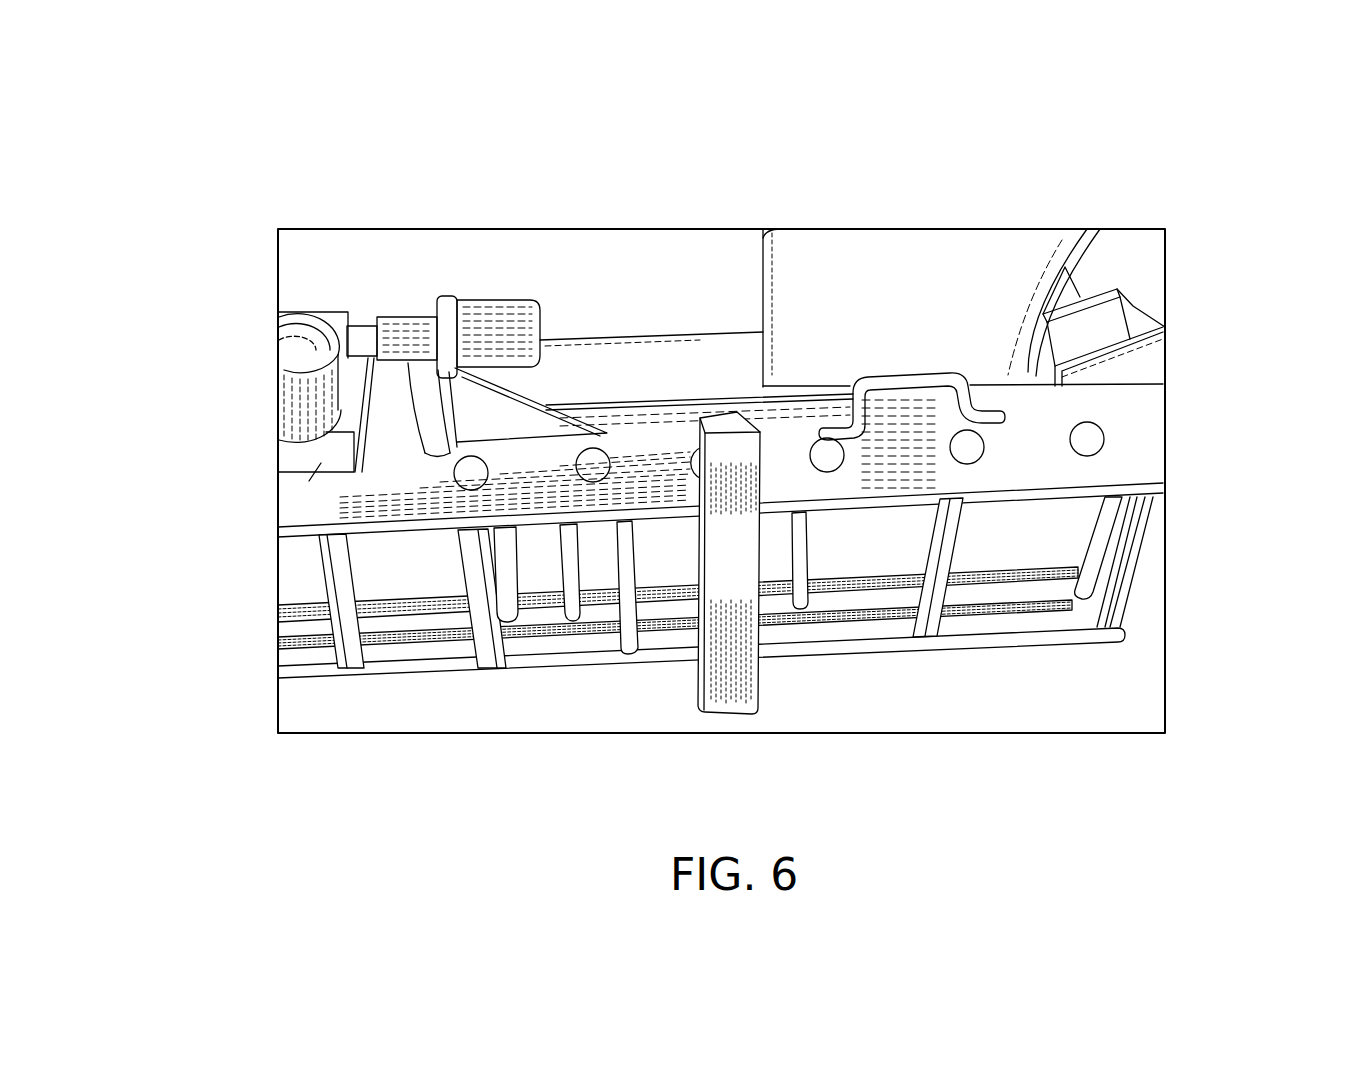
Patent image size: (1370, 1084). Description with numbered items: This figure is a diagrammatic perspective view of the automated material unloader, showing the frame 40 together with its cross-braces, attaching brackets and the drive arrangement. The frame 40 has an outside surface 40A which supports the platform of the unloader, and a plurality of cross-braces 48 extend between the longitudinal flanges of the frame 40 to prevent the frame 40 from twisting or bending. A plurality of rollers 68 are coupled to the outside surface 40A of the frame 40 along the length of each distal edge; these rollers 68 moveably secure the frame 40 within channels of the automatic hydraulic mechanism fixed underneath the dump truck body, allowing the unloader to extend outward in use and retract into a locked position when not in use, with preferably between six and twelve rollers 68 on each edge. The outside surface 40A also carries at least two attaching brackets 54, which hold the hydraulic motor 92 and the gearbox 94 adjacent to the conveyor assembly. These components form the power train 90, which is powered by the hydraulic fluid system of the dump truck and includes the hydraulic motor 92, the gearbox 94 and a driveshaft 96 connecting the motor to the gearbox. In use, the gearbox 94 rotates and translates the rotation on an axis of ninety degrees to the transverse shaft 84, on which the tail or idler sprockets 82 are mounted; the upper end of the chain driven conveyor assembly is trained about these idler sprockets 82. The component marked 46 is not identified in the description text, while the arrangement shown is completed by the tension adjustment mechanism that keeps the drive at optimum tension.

The frame 40 is at (1280, 402).
The outside surface 40A is at (513, 476).
The post 46 is at (707, 695).
The cross-braces 48 is at (483, 652).
The attaching brackets 54 is at (472, 420).
The rollers 68 is at (602, 460).
The idler sprockets 82 is at (1098, 567).
The transverse shaft 84 is at (1112, 583).
The power train 90 is at (435, 172).
The hydraulic motor 92 is at (475, 308).
The gearbox 94 is at (291, 343).
The driveshaft 96 is at (367, 330).